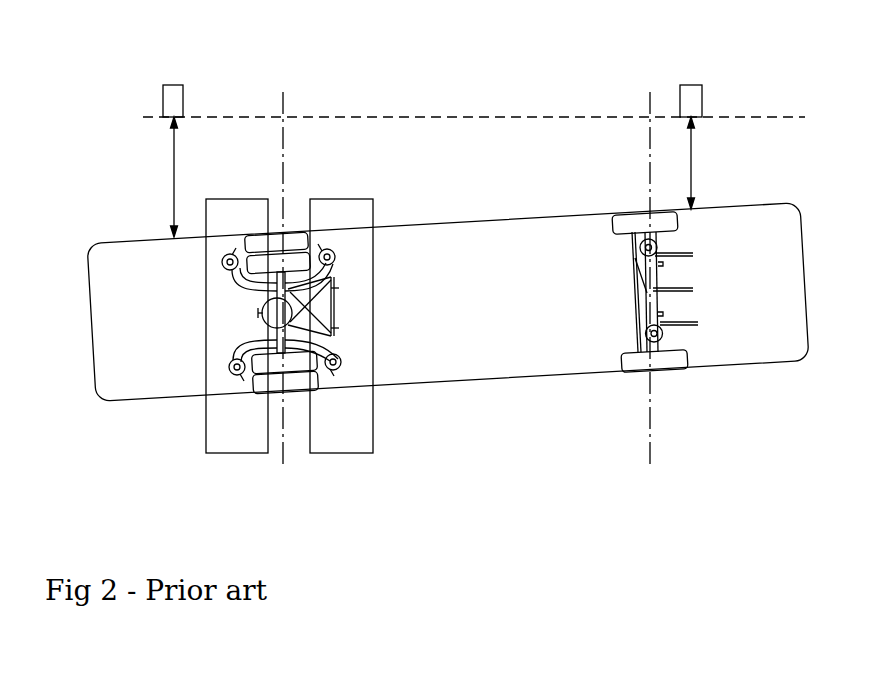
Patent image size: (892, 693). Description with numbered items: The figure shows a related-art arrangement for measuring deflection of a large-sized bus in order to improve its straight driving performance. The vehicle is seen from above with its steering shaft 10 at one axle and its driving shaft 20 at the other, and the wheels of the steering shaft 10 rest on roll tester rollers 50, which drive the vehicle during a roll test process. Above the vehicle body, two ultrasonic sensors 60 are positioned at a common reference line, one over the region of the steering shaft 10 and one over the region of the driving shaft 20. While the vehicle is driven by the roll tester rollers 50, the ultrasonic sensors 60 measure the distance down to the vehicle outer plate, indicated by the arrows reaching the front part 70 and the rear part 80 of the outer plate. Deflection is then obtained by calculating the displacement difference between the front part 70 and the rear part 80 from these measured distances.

The steering shaft 10 is at (260, 311).
The driving shaft 20 is at (647, 290).
The roll tester rollers 50 is at (340, 443).
The ultrasonic sensors 60 is at (173, 92).
The front part 70 is at (700, 212).
The rear part 80 is at (170, 238).